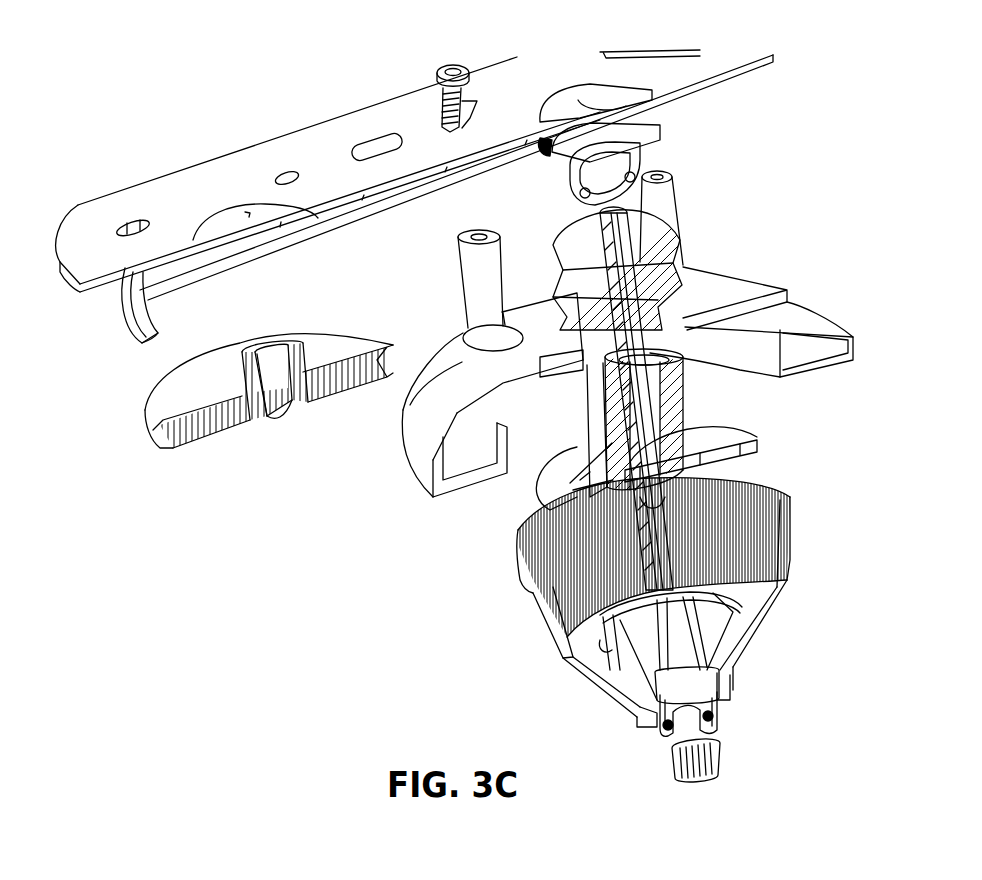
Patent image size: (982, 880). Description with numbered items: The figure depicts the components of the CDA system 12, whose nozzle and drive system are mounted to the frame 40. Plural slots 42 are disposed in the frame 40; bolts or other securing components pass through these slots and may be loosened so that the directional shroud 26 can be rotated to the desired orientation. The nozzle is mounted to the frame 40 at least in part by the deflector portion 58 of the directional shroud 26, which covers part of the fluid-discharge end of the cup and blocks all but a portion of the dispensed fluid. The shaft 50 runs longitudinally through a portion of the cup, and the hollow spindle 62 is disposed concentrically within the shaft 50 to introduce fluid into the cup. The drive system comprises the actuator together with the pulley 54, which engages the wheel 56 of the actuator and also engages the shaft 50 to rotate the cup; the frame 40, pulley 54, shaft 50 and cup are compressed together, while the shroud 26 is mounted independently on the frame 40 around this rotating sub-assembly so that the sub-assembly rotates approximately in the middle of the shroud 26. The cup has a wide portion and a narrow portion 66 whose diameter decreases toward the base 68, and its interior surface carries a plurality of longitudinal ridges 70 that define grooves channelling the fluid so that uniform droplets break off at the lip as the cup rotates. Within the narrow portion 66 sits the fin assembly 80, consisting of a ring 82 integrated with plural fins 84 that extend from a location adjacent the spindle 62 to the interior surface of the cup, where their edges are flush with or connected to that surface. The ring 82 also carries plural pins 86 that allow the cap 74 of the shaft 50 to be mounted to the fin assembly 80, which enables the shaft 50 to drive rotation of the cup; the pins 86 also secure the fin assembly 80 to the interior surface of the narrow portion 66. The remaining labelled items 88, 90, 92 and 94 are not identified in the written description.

The CDA system 12 is at (845, 165).
The directional shroud 26 is at (380, 466).
The frame 40 is at (140, 188).
The slots 42 is at (438, 119).
The shaft 50 is at (672, 395).
The pulley 54 is at (146, 338).
The wheel 56 is at (251, 422).
The deflector portion 58 is at (727, 295).
The spindle 62 is at (820, 322).
The narrow portion 66 is at (745, 662).
The base 68 is at (733, 690).
The longitudinal ridges 70 is at (460, 367).
The cap 74 is at (710, 440).
The fin assembly 80 is at (740, 628).
The ring 82 is at (655, 692).
The fins 84 is at (643, 668).
The pins 86 is at (614, 667).
The tongue 88 is at (573, 490).
The cut wall 90 is at (568, 640).
The plate 92 is at (680, 476).
The bearing 94 is at (718, 718).